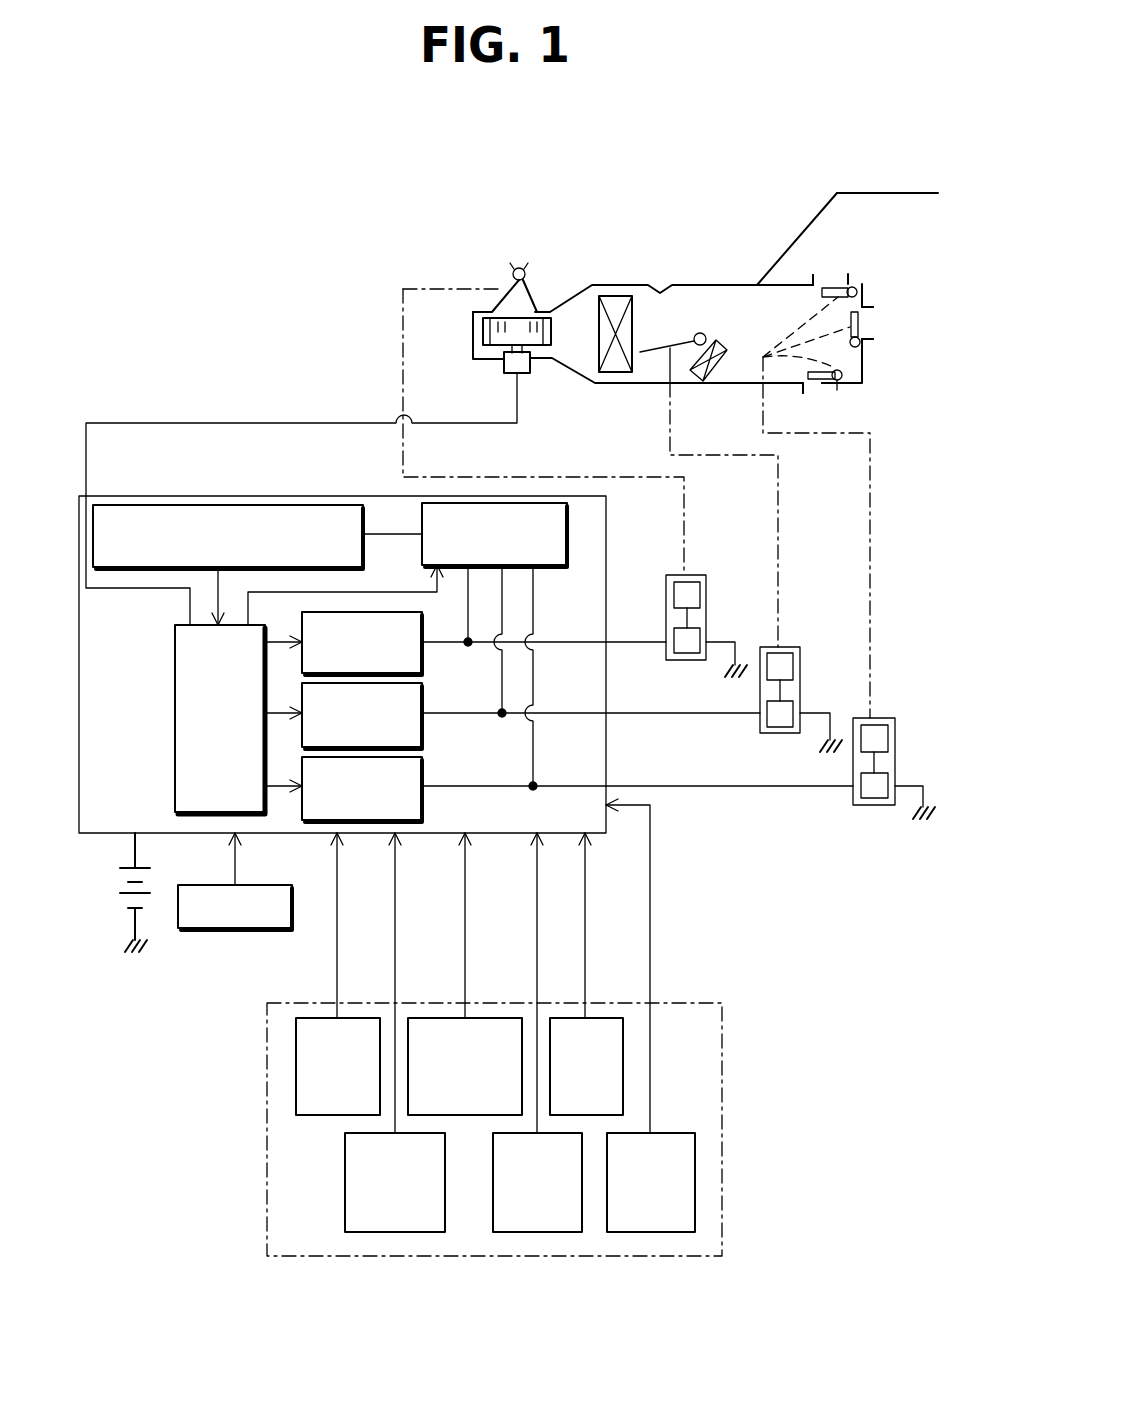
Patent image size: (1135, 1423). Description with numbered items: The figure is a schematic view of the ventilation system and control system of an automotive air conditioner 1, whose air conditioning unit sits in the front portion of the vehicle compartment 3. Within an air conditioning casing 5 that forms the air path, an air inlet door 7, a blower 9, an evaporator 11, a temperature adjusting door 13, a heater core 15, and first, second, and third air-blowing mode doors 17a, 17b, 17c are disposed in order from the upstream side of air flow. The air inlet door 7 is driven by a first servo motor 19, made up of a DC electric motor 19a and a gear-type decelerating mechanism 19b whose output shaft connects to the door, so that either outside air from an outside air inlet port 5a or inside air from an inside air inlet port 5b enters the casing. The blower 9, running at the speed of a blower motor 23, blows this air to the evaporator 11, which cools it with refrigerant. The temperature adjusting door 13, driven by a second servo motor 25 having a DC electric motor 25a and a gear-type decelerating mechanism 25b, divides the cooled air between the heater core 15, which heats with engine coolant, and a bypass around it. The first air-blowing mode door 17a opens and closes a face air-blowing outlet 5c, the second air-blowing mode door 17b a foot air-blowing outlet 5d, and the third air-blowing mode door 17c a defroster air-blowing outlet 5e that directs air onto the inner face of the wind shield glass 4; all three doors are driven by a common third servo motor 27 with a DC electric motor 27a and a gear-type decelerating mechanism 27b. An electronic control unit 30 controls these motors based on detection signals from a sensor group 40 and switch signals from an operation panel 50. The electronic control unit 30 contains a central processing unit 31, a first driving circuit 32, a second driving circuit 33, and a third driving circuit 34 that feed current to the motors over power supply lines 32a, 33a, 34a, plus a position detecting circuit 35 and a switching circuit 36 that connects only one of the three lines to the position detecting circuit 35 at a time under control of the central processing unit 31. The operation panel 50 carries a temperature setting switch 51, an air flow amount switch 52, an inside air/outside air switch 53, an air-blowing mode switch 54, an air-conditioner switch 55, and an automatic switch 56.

The air conditioner 1 is at (620, 270).
The vehicle compartment 3 is at (891, 210).
The wind shield glass 4 is at (826, 195).
The air conditioning casing 5 is at (733, 285).
The outside air inlet port 5a is at (538, 300).
The inside air inlet port 5b is at (490, 288).
The face air-blowing outlet 5c is at (870, 333).
The foot air-blowing outlet 5d is at (848, 390).
The defroster air-blowing outlet 5e is at (832, 284).
The air inlet door 7 is at (512, 280).
The blower 9 is at (485, 333).
The evaporator 11 is at (618, 300).
The temperature adjusting door 13 is at (648, 340).
The heater core 15 is at (712, 383).
The first air-blowing mode door 17a is at (862, 305).
The second air-blowing mode door 17b is at (862, 375).
The third air-blowing mode door 17c is at (815, 300).
The first servo motor 19 is at (684, 618).
The DC electric motor 19a is at (682, 645).
The gear-type decelerating mechanism 19b is at (700, 592).
The blower motor 23 is at (530, 365).
The second servo motor 25 is at (788, 682).
The DC electric motor 25a is at (777, 718).
The gear-type decelerating mechanism 25b is at (793, 665).
The third servo motor 27 is at (883, 755).
The DC electric motor 27a is at (870, 790).
The gear-type decelerating mechanism 27b is at (888, 738).
The electronic control unit 30 is at (292, 492).
The central processing unit 31 is at (182, 623).
The first driving circuit 32 is at (422, 628).
The power supply line 32a is at (570, 640).
The second driving circuit 33 is at (422, 700).
The power supply line 33a is at (570, 712).
The third driving circuit 34 is at (422, 773).
The power supply line 34a is at (570, 784).
The position detecting circuit 35 is at (363, 553).
The switching circuit 36 is at (567, 520).
The sensor group 40 is at (255, 930).
The operation panel 50 is at (708, 1000).
The temperature setting switch 51 is at (337, 1115).
The air flow amount switch 52 is at (400, 1232).
The inside air/outside air switch 53 is at (472, 1115).
The air-blowing mode switch 54 is at (530, 1232).
The air-conditioner switch 55 is at (600, 1115).
The automatic switch 56 is at (660, 1232).